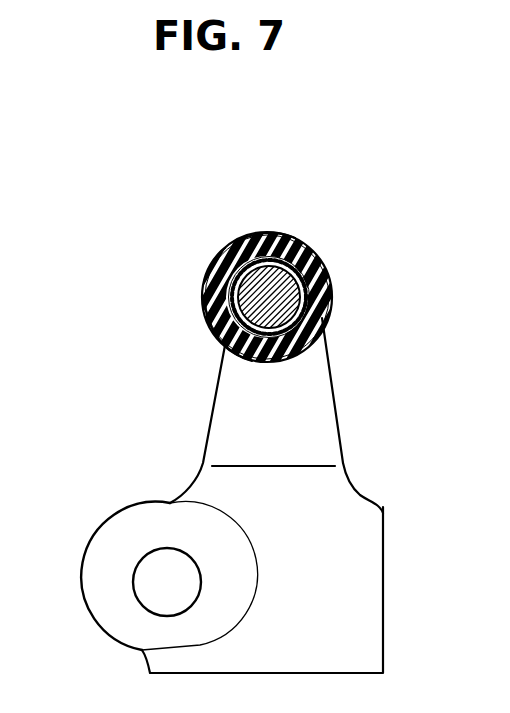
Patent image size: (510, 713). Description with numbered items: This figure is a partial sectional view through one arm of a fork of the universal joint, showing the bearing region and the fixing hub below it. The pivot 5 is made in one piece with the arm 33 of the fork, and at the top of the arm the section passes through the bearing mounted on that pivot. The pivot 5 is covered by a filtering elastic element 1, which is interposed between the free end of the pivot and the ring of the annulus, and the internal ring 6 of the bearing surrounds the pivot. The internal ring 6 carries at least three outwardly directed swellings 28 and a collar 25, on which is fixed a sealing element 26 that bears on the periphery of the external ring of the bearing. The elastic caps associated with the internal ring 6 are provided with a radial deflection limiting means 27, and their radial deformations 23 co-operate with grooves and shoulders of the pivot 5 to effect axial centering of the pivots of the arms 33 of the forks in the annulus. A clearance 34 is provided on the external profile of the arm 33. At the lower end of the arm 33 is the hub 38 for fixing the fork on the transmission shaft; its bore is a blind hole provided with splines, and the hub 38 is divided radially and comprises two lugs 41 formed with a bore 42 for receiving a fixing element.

The filtering elastic element 1 is at (280, 233).
The pivot 5 is at (318, 253).
The internal ring 6 is at (332, 288).
The radial deformations 23 is at (306, 243).
The collar 25 is at (258, 233).
The sealing element 26 is at (224, 260).
The radial deflection limiting means 27 is at (205, 300).
The swellings 28 is at (287, 237).
The arm 33 is at (300, 408).
The clearance 34 is at (288, 466).
The hub 38 is at (355, 638).
The lugs 41 is at (155, 528).
The bore 42 is at (157, 583).